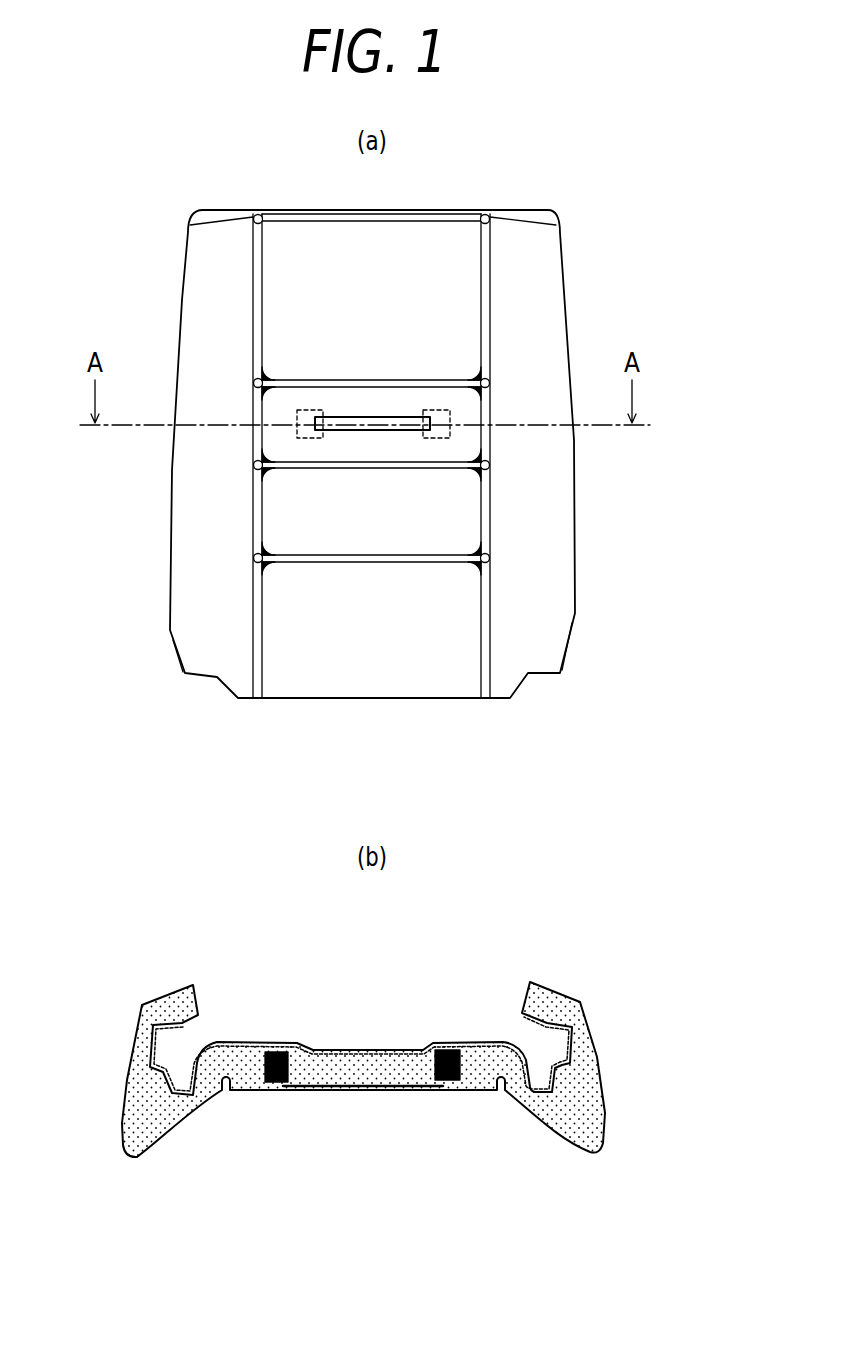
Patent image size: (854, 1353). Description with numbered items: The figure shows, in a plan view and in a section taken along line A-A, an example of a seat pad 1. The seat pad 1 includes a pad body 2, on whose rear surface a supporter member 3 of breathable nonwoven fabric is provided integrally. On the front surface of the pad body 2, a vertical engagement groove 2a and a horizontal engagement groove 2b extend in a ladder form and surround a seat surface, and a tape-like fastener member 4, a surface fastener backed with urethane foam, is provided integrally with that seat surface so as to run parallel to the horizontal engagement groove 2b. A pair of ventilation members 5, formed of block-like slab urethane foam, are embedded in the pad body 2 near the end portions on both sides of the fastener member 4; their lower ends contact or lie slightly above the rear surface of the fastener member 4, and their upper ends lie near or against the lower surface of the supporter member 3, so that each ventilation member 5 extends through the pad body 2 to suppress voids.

The seat pad 1 is at (587, 650).
The pad body 2 is at (563, 551).
The vertical engagement groove 2a is at (264, 648).
The horizontal engagement groove 2b is at (331, 383).
The supporter member 3 is at (470, 1043).
The fastener member 4 is at (369, 417).
The ventilation member 5 is at (310, 440).